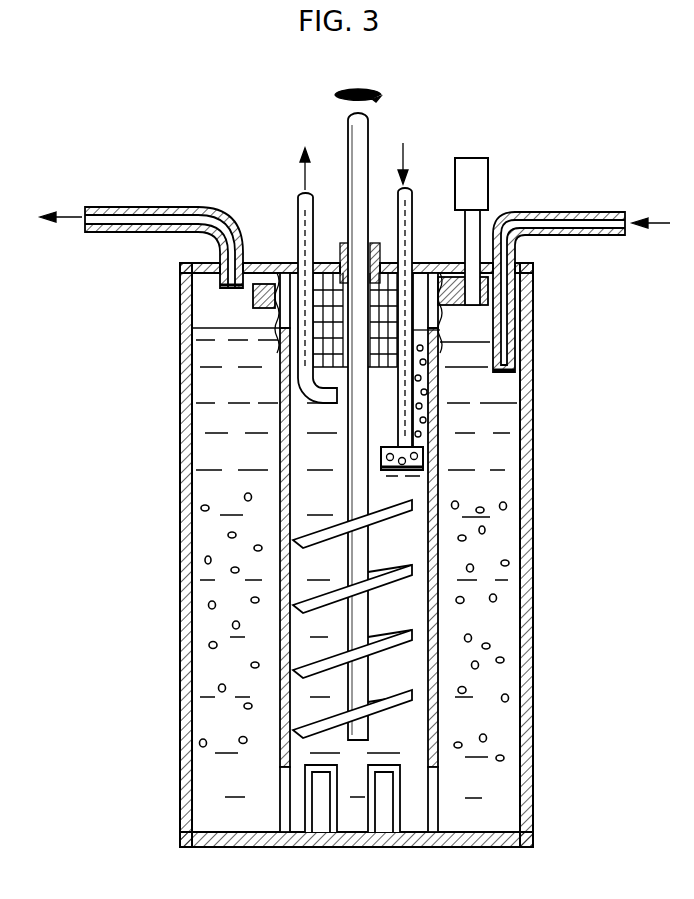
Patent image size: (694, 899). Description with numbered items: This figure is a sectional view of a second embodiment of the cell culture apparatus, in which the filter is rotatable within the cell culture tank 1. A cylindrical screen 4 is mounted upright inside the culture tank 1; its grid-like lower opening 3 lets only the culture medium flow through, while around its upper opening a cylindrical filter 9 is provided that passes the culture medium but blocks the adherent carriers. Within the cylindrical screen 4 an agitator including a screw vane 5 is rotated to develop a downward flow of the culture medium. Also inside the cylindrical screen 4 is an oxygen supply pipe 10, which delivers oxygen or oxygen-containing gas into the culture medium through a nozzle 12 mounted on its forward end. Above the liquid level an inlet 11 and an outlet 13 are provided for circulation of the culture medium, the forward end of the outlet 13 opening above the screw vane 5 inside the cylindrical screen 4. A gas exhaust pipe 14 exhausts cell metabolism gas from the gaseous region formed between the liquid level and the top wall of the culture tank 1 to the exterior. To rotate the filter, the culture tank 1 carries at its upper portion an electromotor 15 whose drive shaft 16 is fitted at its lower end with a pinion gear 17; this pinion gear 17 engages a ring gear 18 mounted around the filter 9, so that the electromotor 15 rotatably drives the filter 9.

The cell culture tank 1 is at (533, 742).
The lower opening 3 is at (438, 810).
The cylindrical screen 4 is at (440, 598).
The screw vane 5 is at (405, 700).
The filter 9 is at (440, 362).
The oxygen supply pipe 10 is at (403, 210).
The inlet 11 is at (597, 211).
The nozzle 12 is at (440, 457).
The outlet 13 is at (303, 217).
The gas exhaust pipe 14 is at (136, 207).
The electromotor 15 is at (477, 168).
The drive shaft 16 is at (472, 228).
The pinion gear 17 is at (533, 302).
The ring gear 18 is at (253, 293).